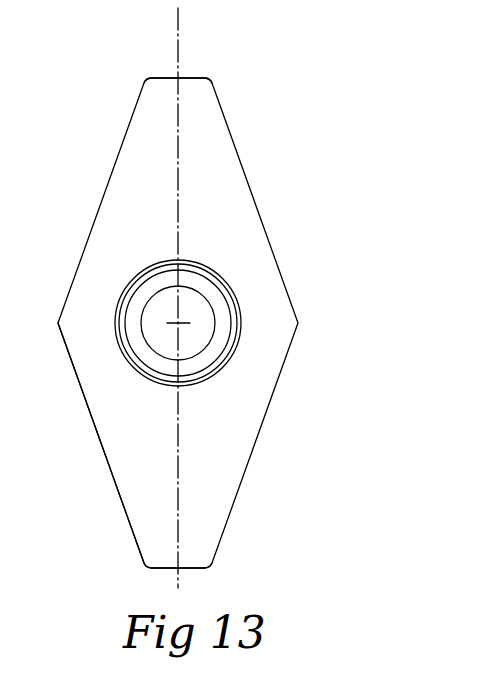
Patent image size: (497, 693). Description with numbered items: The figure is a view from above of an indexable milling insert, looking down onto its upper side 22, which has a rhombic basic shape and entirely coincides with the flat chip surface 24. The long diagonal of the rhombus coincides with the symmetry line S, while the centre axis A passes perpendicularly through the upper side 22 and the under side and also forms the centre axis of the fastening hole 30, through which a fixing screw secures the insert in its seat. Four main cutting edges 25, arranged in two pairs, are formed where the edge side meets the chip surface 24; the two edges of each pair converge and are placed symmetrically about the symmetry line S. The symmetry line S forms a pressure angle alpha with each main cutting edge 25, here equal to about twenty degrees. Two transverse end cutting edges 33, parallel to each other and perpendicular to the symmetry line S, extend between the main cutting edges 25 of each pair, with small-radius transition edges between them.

The upper side 22 is at (115, 420).
The chip surface 24 is at (117, 210).
The main cutting edges 25 is at (127, 128).
The fastening hole 30 is at (149, 321).
The end cutting edges 33 is at (165, 77).
The symmetry line S is at (178, 45).
The centre axis A is at (178, 323).
The pressure angle alpha is at (232, 142).